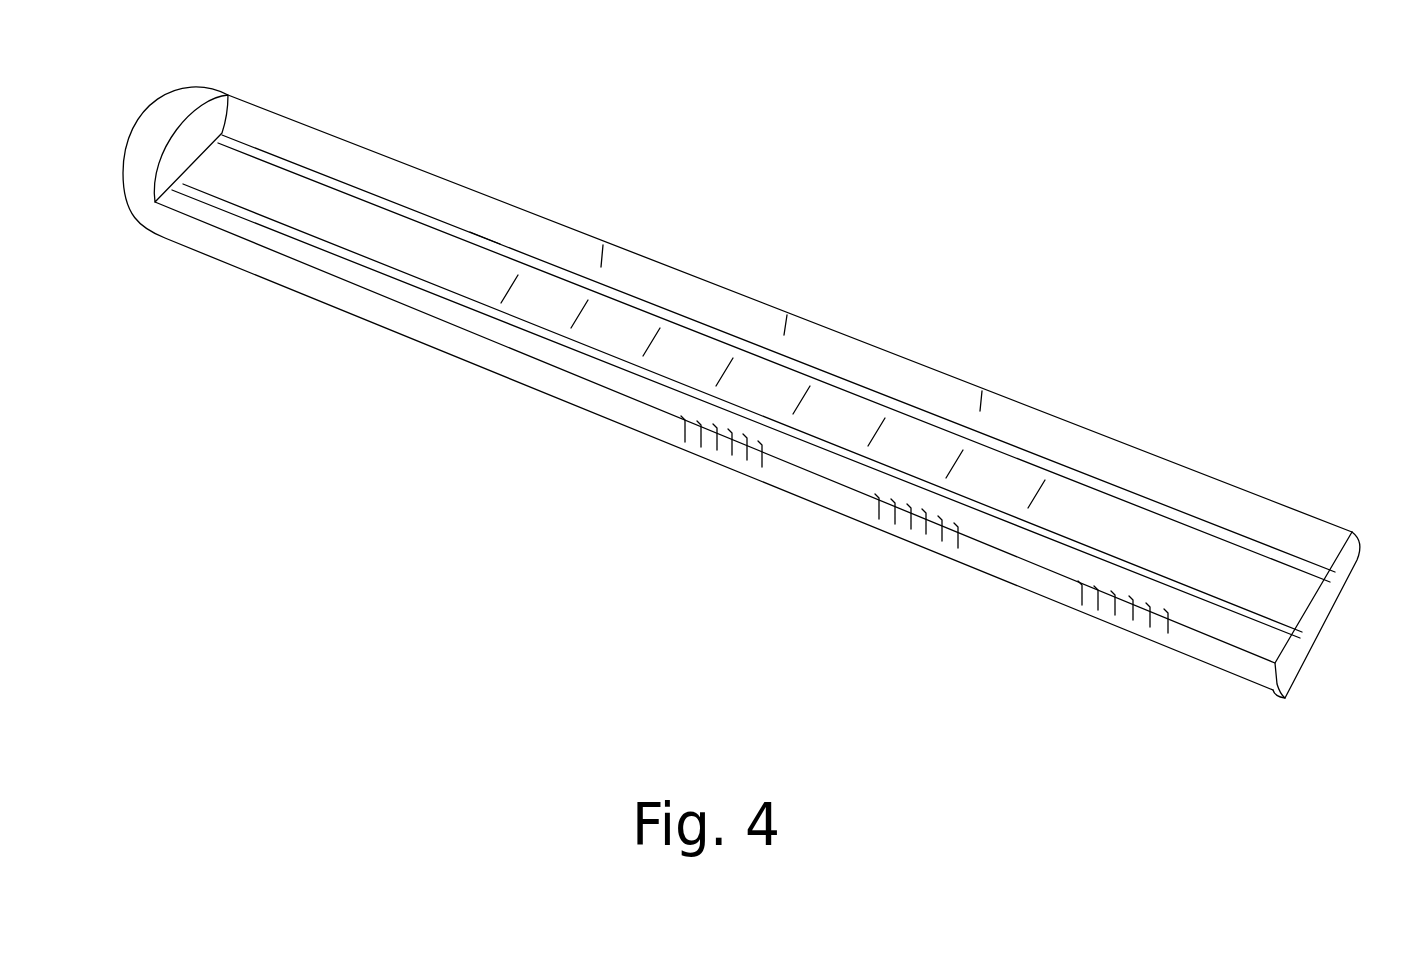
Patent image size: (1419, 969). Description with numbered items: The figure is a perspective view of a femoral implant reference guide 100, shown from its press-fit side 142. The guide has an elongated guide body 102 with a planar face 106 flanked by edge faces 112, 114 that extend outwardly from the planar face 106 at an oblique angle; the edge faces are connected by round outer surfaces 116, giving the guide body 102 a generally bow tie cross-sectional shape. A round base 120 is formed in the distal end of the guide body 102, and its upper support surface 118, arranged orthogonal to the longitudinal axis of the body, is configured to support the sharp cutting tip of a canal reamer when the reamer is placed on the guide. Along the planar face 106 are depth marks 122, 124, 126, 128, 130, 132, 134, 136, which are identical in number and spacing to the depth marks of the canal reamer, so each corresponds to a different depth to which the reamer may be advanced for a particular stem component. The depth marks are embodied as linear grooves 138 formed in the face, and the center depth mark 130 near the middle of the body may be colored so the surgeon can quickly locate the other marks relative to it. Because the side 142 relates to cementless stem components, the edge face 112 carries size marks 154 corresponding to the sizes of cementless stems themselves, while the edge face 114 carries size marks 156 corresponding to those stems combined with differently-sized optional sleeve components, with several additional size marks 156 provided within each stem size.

The femoral implant reference guide 100 is at (978, 262).
The guide body 102 is at (1167, 472).
The planar face 106 is at (392, 234).
The edge face 112 is at (355, 158).
The edge face 114 is at (288, 250).
The round outer surface 116 is at (1357, 540).
The upper support surface 118 is at (205, 117).
The round base 120 is at (163, 93).
The depth mark 122 is at (510, 268).
The depth mark 124 is at (590, 299).
The depth mark 126 is at (661, 328).
The depth mark 128 is at (735, 359).
The depth mark 130 is at (813, 386).
The depth mark 132 is at (886, 418).
The depth mark 134 is at (964, 450).
The depth mark 136 is at (1046, 480).
The linear groove 138 is at (660, 378).
The side 142 is at (480, 206).
The size mark 154 is at (610, 260).
The size mark 156 is at (748, 459).